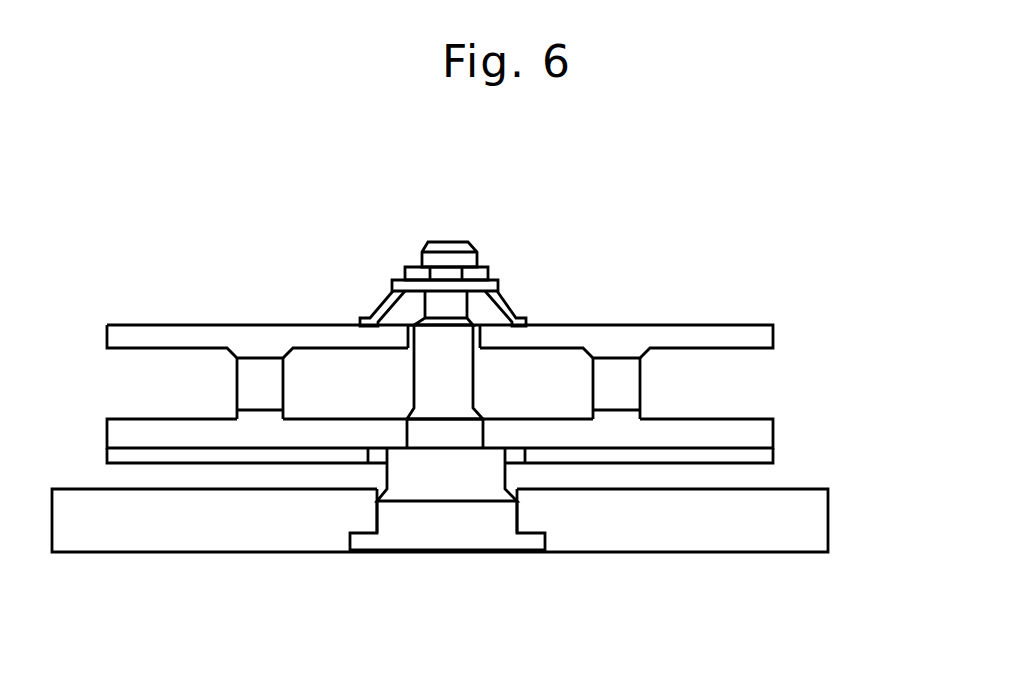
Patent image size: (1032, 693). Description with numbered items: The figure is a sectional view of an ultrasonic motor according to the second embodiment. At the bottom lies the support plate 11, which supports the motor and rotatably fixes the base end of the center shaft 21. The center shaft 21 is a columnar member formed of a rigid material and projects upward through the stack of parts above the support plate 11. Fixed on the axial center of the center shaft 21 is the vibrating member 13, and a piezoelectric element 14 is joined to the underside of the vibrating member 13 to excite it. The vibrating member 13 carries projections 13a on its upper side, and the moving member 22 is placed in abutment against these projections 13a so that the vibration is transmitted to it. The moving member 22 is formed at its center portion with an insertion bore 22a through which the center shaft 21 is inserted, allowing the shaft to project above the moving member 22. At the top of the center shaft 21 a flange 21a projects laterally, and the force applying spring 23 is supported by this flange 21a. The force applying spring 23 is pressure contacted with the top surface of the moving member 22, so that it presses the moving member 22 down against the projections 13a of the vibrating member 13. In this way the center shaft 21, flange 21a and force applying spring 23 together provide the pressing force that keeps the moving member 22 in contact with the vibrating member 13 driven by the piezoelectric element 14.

The support plate 11 is at (777, 535).
The vibrating member 13 is at (758, 437).
The projections 13a is at (643, 388).
The piezoelectric element 14 is at (767, 458).
The center shaft 21 is at (458, 475).
The flange 21a is at (411, 273).
The moving member 22 is at (738, 327).
The insertion bore 22a is at (472, 337).
The force applying spring 23 is at (383, 302).